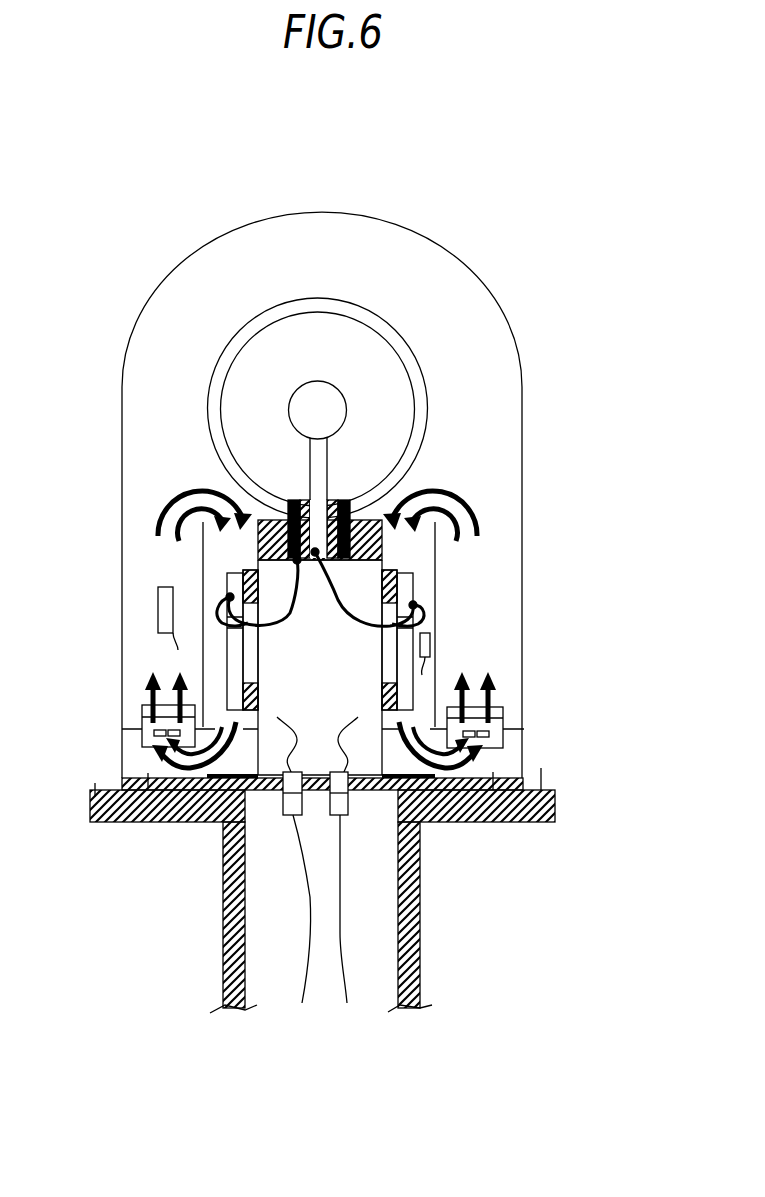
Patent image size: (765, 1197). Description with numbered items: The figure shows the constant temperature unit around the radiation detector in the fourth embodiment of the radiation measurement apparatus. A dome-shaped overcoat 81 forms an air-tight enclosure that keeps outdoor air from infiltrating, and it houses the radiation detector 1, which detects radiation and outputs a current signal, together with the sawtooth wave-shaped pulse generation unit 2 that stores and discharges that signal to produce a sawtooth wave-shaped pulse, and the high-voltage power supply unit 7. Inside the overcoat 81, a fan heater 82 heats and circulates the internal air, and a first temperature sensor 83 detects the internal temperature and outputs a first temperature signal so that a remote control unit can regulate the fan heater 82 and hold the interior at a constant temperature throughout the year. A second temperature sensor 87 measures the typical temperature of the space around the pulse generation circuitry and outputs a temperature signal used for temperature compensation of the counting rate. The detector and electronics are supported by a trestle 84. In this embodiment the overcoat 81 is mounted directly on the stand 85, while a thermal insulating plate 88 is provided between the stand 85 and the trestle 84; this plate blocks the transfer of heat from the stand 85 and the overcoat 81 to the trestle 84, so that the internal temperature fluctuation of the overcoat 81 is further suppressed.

The radiation detector 1 is at (427, 408).
The sawtooth wave-shaped pulse generation unit 2 is at (413, 577).
The high-voltage power supply unit 7 is at (227, 573).
The overcoat 81 is at (516, 346).
The fan heater 82 is at (503, 742).
The first temperature sensor 83 is at (158, 613).
The trestle 84 is at (427, 823).
The stand 85 is at (422, 1007).
The second temperature sensor 87 is at (430, 643).
The thermal insulating plate 88 is at (532, 825).